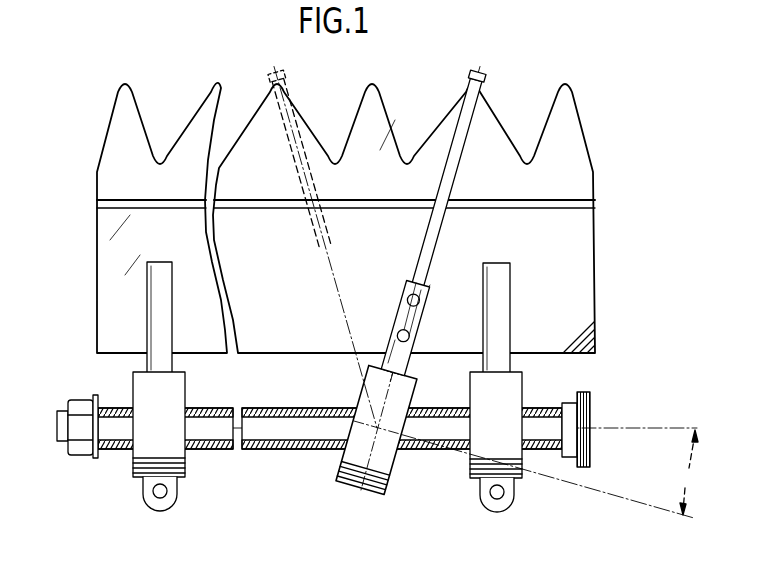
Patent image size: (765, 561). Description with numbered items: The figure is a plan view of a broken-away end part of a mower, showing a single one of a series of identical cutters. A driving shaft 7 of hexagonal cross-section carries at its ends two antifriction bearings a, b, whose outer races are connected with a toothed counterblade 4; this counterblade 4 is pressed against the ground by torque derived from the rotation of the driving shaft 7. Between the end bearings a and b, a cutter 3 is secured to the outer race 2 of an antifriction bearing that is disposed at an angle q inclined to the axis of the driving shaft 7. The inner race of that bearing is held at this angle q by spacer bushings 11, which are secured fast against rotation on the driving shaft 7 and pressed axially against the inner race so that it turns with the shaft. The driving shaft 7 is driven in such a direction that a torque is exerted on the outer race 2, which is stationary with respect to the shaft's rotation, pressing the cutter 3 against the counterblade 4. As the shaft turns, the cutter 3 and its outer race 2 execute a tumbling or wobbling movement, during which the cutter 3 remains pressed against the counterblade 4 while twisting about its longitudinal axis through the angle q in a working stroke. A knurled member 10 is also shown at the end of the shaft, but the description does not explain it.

The outer race 2 is at (350, 455).
The cutter 3 is at (456, 128).
The counterblade 4 is at (574, 117).
The driving shaft 7 is at (402, 432).
The knurled adjusting knob 10 is at (592, 404).
The spacer bushing 11 is at (293, 452).
The antifriction bearing a is at (472, 462).
The antifriction bearing b is at (140, 452).
The angle q is at (689, 472).